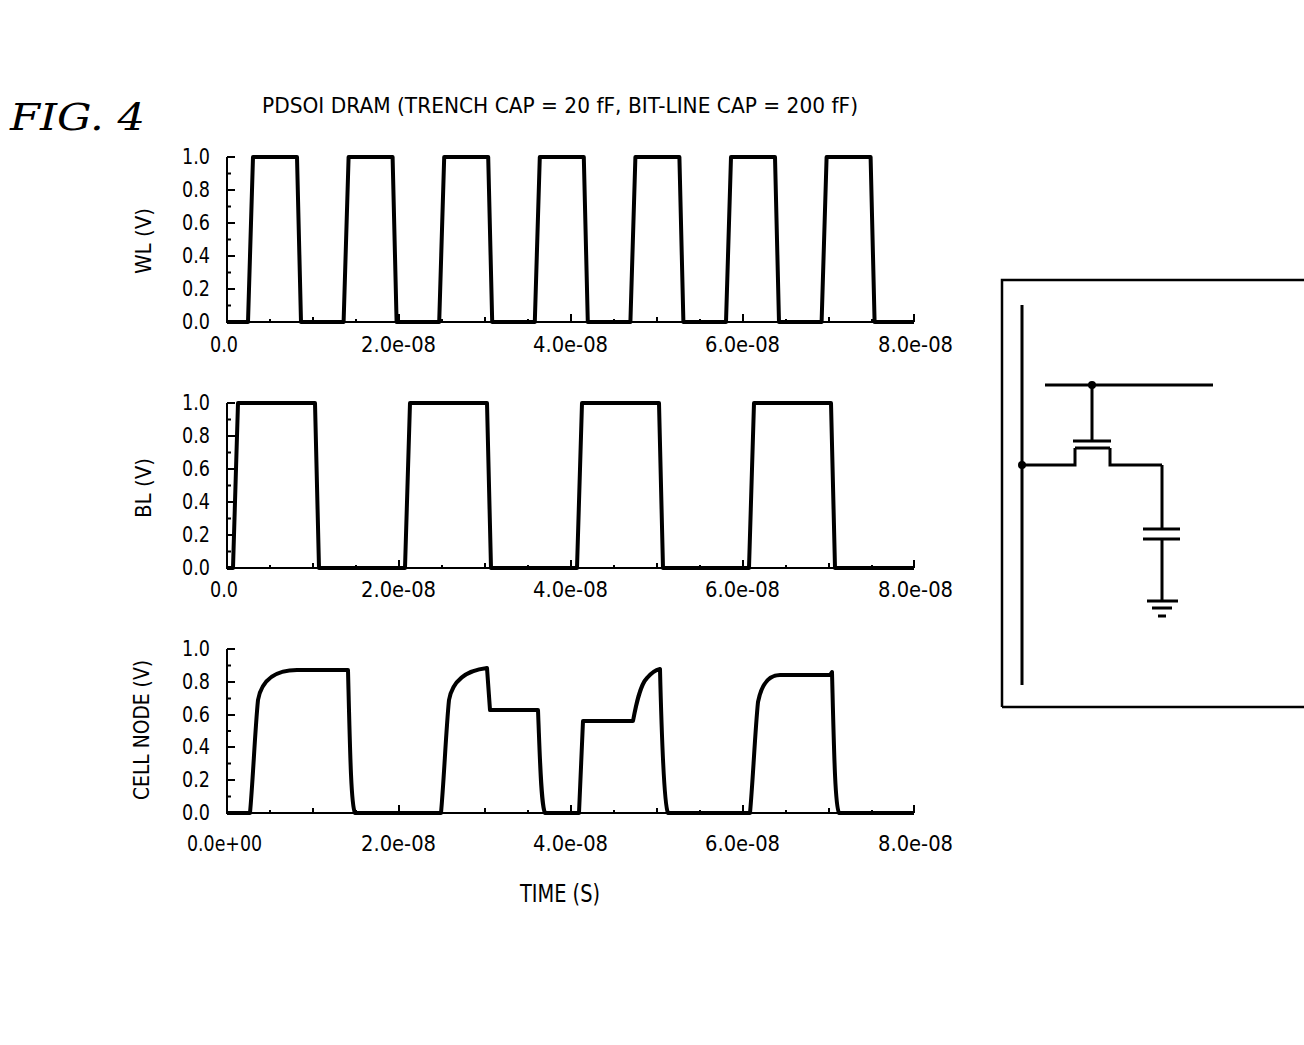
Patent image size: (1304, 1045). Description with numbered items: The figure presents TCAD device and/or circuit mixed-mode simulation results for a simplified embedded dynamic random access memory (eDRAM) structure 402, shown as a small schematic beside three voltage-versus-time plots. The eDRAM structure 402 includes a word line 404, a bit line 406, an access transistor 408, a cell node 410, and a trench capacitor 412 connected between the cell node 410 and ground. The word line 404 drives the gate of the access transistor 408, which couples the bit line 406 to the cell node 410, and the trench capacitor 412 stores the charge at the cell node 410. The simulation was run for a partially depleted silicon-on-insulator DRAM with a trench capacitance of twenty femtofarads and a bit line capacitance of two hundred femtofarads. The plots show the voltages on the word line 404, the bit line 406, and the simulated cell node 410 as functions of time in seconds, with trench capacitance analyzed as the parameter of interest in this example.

The embedded dynamic random access memory structure 402 is at (1214, 280).
The word line 404 is at (1136, 385).
The bit line 406 is at (1024, 630).
The access transistor 408 is at (1075, 452).
The cell node 410 is at (1165, 467).
The trench capacitor 412 is at (1148, 528).